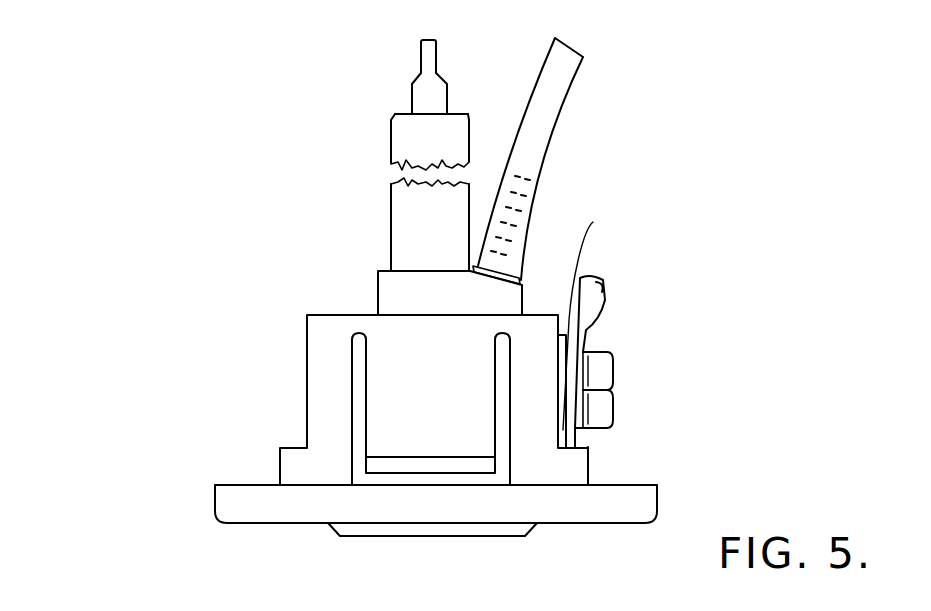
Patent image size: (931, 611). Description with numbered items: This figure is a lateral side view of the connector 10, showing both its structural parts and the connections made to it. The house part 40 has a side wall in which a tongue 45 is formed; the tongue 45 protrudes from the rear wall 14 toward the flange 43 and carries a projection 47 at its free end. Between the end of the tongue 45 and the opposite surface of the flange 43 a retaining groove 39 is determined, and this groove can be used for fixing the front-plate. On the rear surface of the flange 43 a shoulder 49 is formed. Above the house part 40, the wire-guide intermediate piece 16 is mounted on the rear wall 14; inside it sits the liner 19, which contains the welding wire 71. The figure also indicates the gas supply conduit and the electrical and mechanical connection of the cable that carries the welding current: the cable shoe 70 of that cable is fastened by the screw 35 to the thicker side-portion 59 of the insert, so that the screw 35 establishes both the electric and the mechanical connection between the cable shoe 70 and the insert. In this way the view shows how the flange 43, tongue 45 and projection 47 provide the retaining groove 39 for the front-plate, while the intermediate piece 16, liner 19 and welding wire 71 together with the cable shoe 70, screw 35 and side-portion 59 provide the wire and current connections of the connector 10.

The connector 10 is at (244, 244).
The rear wall 14 is at (330, 305).
The wire-guide intermediate piece 16 is at (395, 218).
The liner 19 is at (420, 98).
The welding wire 71 is at (428, 60).
The house part 40 is at (307, 343).
The tongue 45 is at (395, 400).
The projection 47 is at (385, 458).
The flange 43 is at (215, 508).
The retaining groove 39 is at (486, 478).
The shoulder 49 is at (594, 458).
The thicker side-portion 59 is at (593, 222).
The cable shoe 70 is at (592, 300).
The screw 35 is at (600, 372).